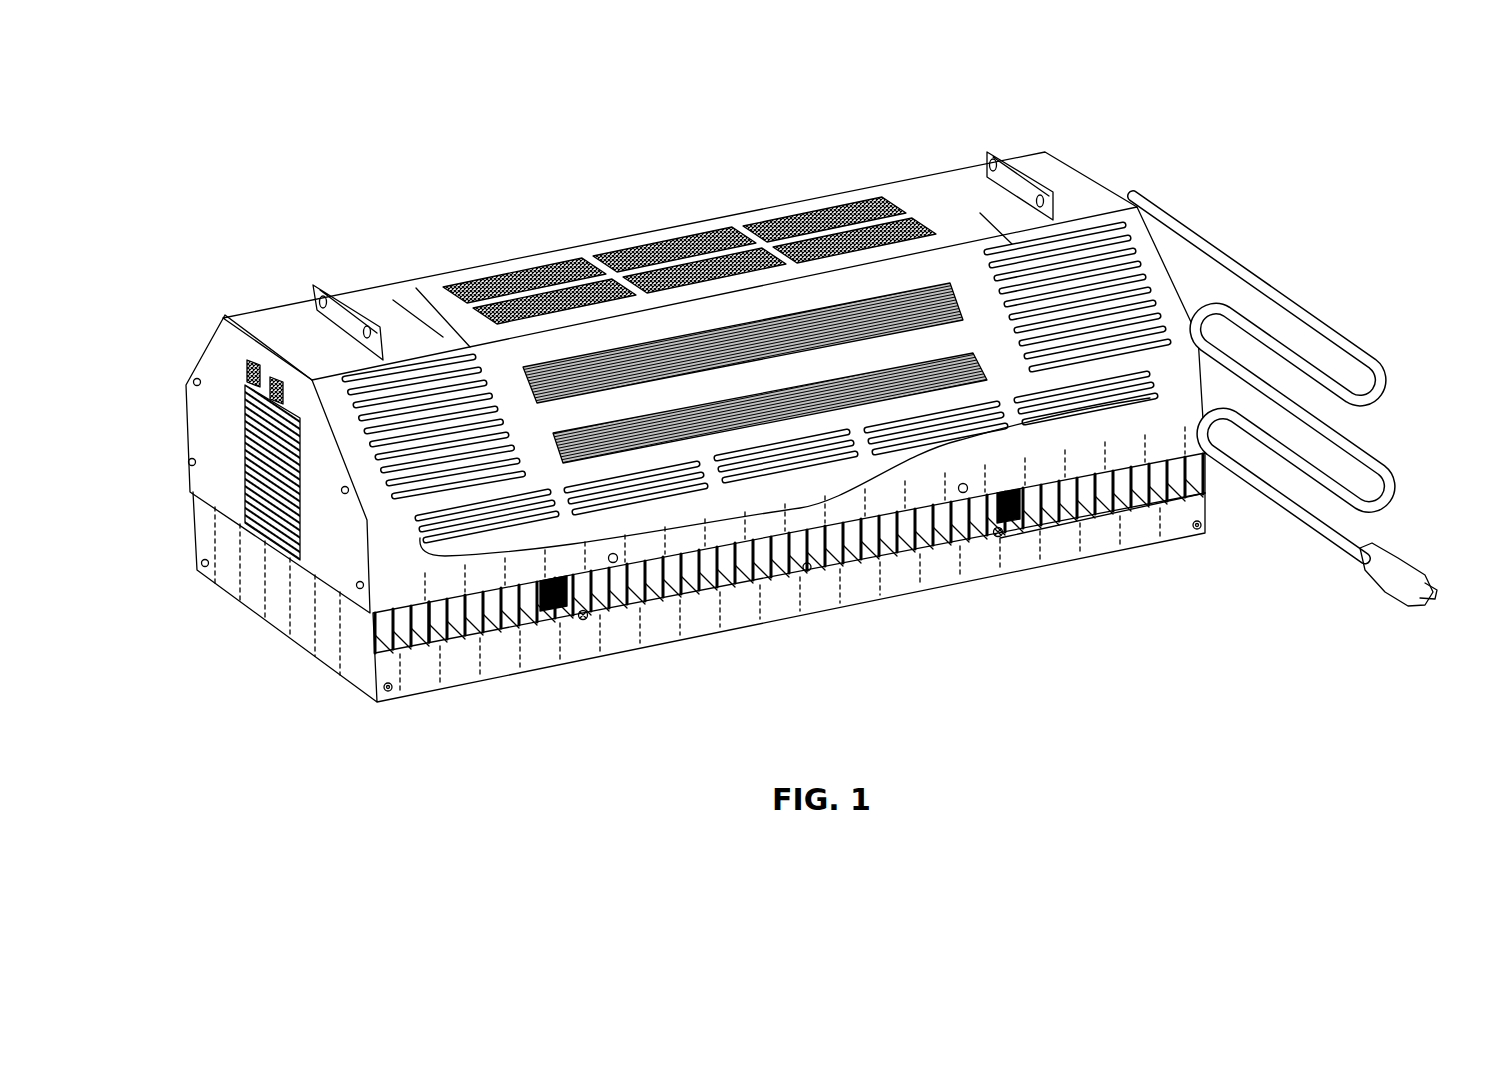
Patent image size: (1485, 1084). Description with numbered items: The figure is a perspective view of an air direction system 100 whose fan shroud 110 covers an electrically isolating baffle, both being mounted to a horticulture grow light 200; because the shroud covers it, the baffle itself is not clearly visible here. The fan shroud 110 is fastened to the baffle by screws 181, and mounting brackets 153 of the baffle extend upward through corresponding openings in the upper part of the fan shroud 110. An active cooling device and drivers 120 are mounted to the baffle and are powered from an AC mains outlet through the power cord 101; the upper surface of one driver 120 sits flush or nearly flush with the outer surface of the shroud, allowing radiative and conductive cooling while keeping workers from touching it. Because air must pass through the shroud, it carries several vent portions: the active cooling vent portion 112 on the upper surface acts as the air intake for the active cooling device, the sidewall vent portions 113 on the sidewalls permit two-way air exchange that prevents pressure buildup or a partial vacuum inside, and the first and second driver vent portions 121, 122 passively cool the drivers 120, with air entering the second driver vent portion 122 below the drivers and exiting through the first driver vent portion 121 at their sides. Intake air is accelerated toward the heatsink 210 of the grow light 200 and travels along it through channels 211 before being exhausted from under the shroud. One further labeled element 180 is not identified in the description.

The air direction system 100 is at (270, 113).
The power cord 101 is at (1390, 497).
The fan shroud 110 is at (890, 195).
The active cooling vent portion 112 is at (858, 192).
The sidewall vent portions 113 is at (222, 449).
The drivers 120 is at (873, 352).
The first driver vent portion 121 is at (1154, 319).
The second driver vent portion 122 is at (833, 560).
The mounting brackets 153 is at (330, 288).
The bottom air intake assembly 180 is at (1047, 523).
The screws 181 is at (606, 568).
The grow light 200 is at (450, 673).
The heatsink 210 is at (365, 637).
The channels 211 is at (432, 640).